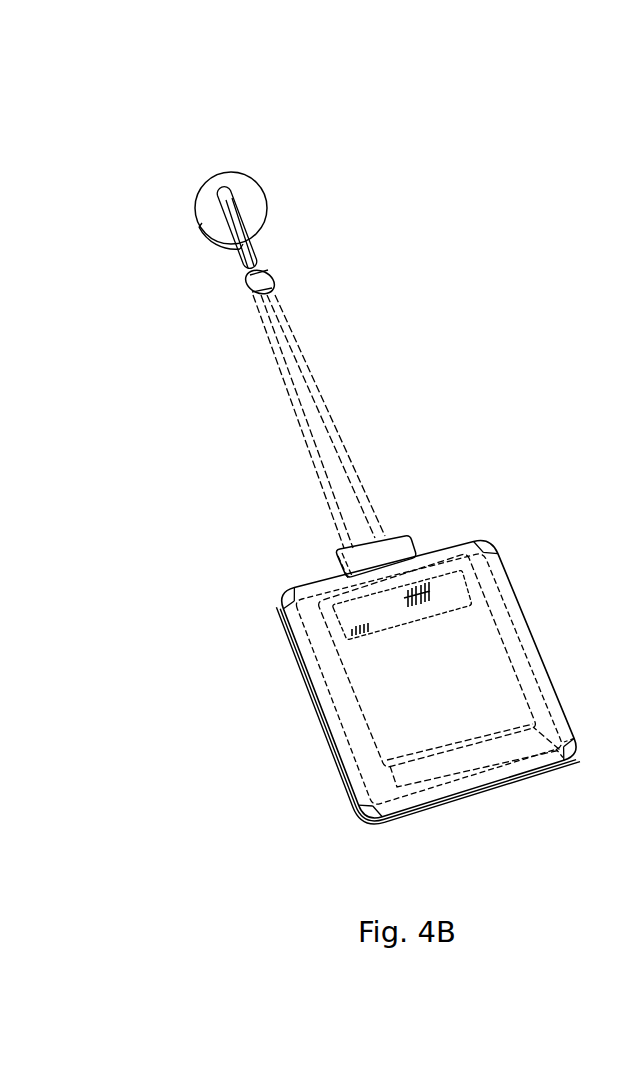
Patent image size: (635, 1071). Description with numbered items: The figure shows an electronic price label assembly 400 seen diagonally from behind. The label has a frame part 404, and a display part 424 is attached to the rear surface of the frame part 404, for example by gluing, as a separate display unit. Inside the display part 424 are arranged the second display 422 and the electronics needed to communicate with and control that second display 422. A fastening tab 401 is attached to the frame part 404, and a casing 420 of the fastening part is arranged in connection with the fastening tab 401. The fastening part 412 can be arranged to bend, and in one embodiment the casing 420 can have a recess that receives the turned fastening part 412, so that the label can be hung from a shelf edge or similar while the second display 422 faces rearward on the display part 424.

The wearable monitoring device assembly 400 is at (137, 61).
The fastening tab 401 is at (348, 457).
The frame part 404 is at (370, 758).
The fastening part 412 is at (247, 258).
The casing 420 is at (252, 195).
The second display 422 is at (458, 592).
The display part 424 is at (367, 667).